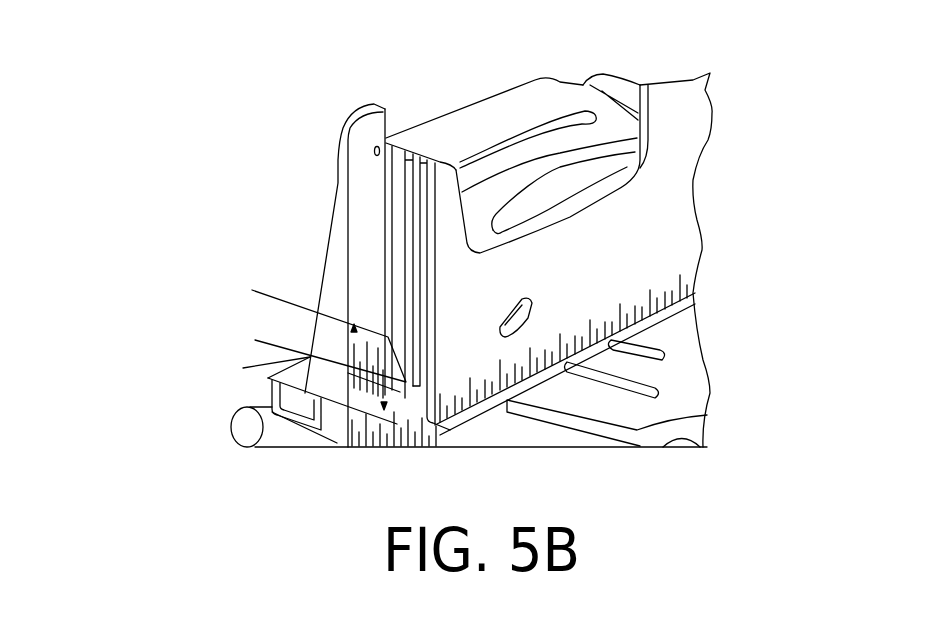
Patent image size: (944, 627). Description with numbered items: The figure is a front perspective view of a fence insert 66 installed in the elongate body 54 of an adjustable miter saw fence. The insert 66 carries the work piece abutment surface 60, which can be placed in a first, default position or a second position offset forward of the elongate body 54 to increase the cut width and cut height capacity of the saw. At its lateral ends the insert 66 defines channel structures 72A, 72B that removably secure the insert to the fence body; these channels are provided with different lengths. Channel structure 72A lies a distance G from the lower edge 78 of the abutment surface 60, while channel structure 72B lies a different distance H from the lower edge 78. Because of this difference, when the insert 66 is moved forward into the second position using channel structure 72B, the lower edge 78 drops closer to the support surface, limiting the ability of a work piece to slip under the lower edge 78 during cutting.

The elongate body 54 is at (340, 223).
The fence insert 66 is at (517, 205).
The channel structure 72A is at (427, 290).
The channel structure 72B is at (397, 290).
The work piece abutment surface 60 is at (588, 305).
The lower edge 78 is at (554, 365).
The distance G is at (385, 400).
The distance H is at (360, 380).